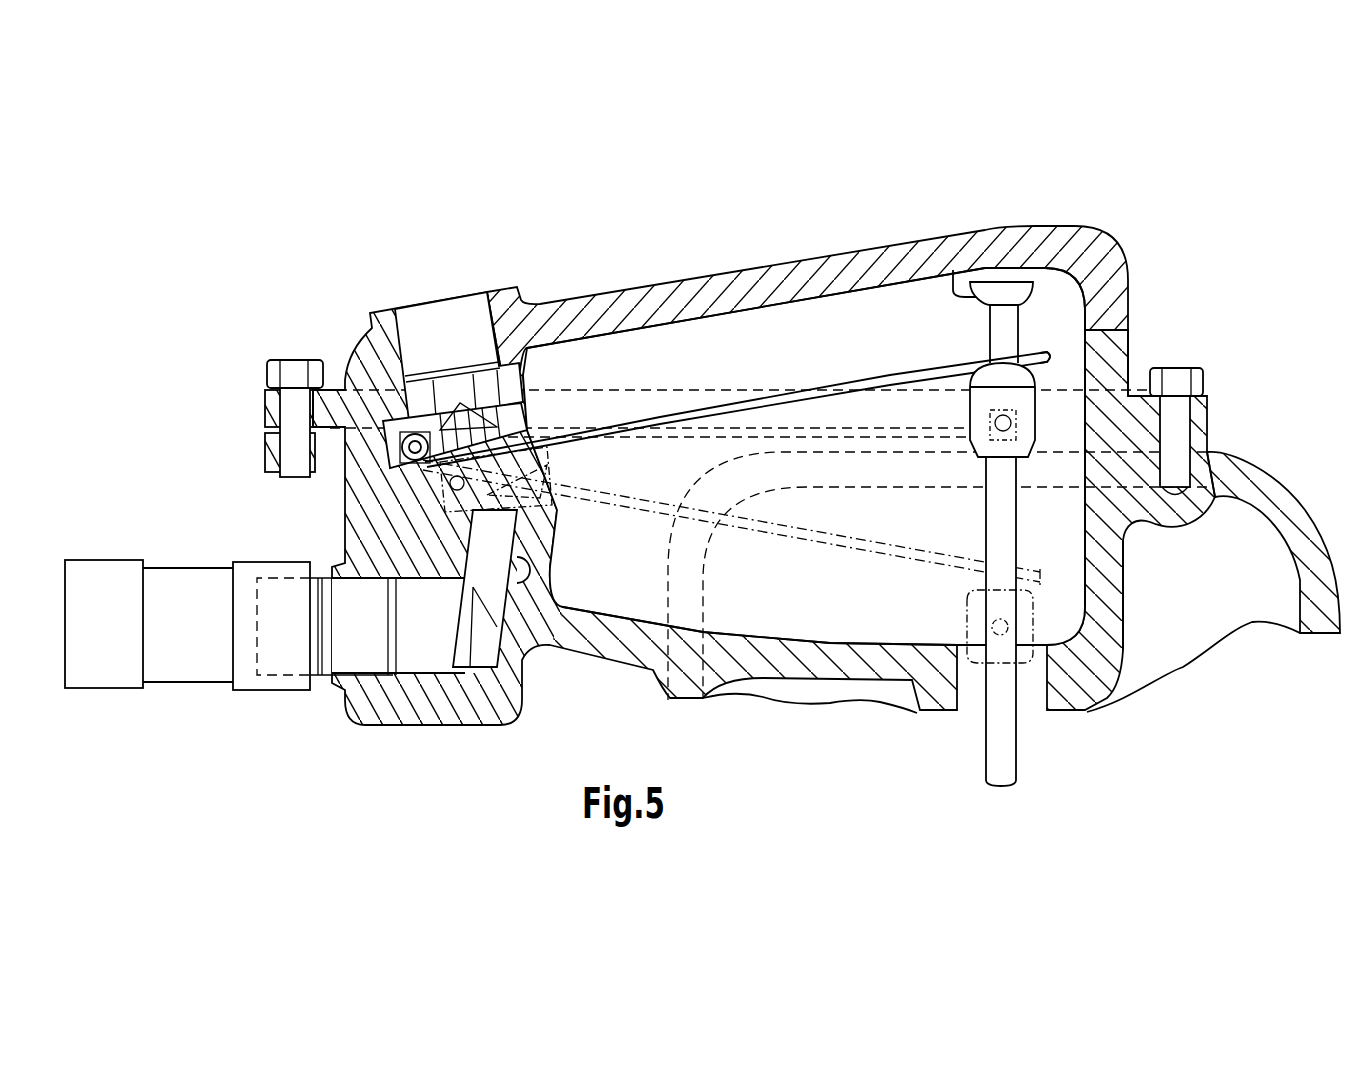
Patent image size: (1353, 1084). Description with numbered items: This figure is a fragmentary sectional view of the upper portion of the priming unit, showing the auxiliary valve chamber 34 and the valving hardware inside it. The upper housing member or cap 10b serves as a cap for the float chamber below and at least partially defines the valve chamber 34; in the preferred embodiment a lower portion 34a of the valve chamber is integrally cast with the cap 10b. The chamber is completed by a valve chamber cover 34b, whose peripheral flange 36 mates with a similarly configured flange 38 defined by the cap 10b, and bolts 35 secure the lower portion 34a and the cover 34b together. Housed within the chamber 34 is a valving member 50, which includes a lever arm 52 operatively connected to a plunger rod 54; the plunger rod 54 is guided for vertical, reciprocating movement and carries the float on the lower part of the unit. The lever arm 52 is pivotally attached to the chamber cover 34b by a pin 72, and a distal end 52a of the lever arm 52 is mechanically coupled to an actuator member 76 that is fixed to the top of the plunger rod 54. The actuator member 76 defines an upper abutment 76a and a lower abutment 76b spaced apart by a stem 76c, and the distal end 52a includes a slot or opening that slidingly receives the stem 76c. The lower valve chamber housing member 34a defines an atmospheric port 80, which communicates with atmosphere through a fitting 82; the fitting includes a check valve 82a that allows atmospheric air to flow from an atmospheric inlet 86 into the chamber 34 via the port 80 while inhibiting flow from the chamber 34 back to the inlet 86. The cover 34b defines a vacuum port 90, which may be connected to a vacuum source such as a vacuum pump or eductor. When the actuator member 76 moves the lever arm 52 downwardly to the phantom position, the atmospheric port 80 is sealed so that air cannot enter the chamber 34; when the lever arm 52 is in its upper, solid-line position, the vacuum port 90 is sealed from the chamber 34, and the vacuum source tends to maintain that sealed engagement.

The upper housing member 10b is at (1297, 510).
The auxiliary valve chamber 34 is at (782, 354).
The lower portion of the valve chamber 34a is at (1100, 637).
The valve chamber cover 34b is at (731, 272).
The bolts 35 is at (297, 367).
The peripheral flange 36 is at (263, 408).
The flange 38 is at (262, 447).
The valving member 50 is at (605, 412).
The lever arm 52 is at (945, 366).
The distal end of the lever arm 52a is at (1043, 355).
The plunger rod 54 is at (1005, 538).
The pin 72 is at (397, 452).
The actuator member 76 is at (1055, 325).
The upper abutment 76a is at (993, 247).
The lower abutment 76b is at (1015, 377).
The stem 76c is at (1000, 332).
The atmospheric port 80 is at (530, 563).
The fitting 82 is at (272, 718).
The check valve 82a is at (103, 647).
The atmospheric inlet 86 is at (101, 600).
The vacuum port 90 is at (495, 325).